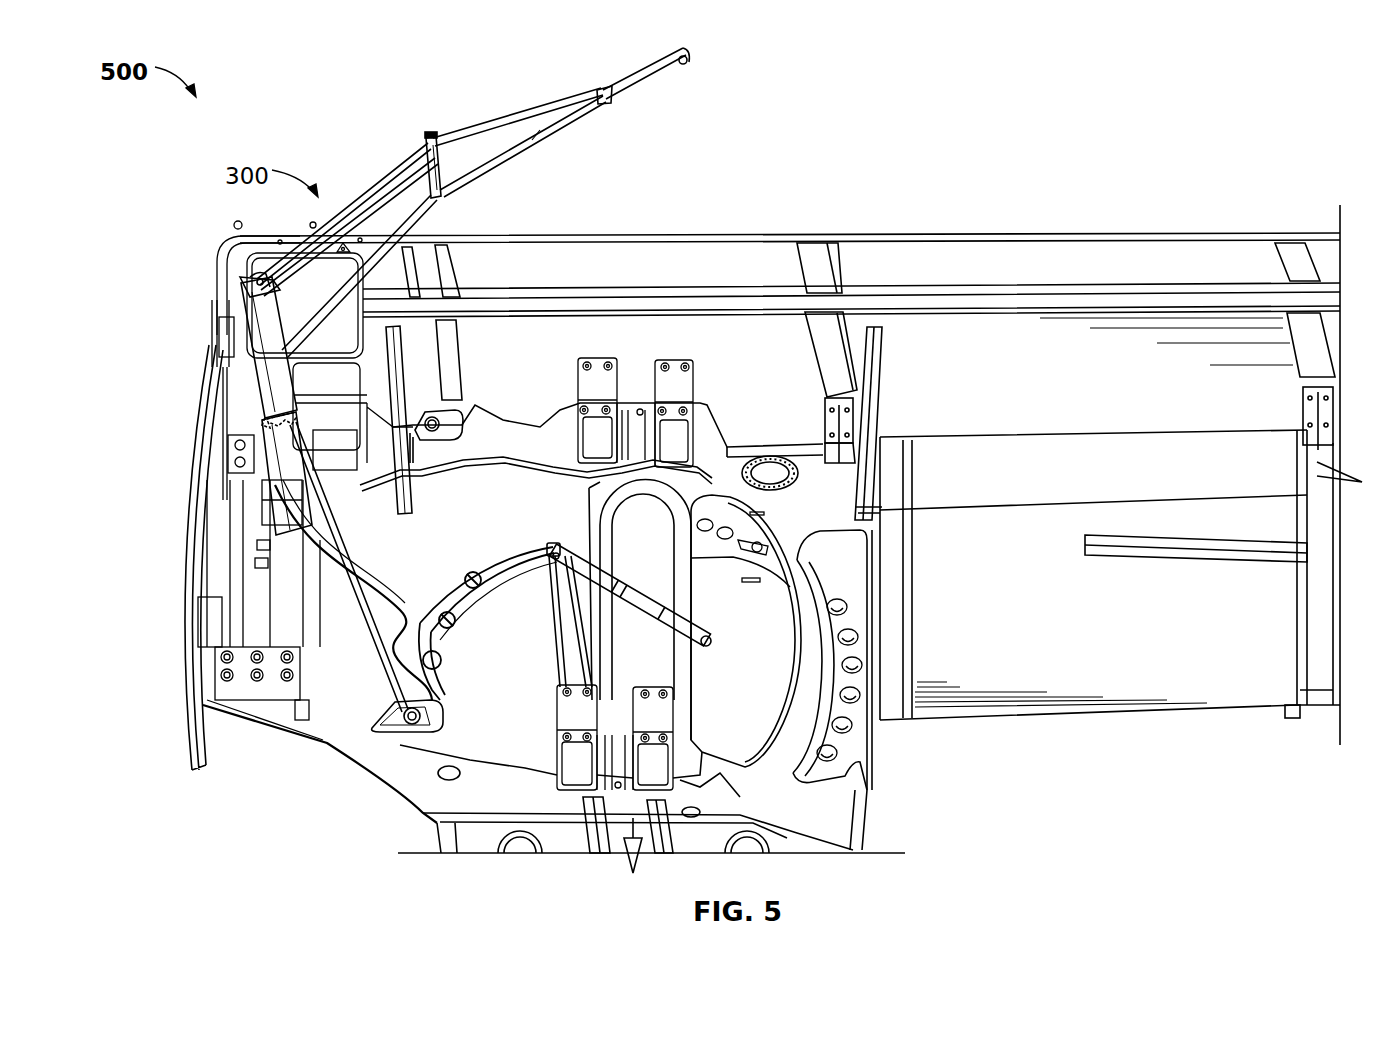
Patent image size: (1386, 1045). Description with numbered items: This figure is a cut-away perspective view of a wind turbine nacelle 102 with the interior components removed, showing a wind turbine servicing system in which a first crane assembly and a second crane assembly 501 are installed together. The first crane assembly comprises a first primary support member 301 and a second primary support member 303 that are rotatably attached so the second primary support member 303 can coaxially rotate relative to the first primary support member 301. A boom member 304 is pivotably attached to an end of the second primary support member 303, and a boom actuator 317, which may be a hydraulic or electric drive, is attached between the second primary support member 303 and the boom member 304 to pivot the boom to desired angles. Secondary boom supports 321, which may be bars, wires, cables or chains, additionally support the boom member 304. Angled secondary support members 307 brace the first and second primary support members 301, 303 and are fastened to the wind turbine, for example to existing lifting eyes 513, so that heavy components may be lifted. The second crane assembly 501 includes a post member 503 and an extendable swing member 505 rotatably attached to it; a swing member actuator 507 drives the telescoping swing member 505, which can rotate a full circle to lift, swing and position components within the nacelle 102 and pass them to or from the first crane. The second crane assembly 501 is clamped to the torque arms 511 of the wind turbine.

The nacelle 102 is at (978, 330).
The first primary support member 301 is at (287, 500).
The second primary support member 303 is at (262, 313).
The boom member 304 is at (512, 148).
The secondary support members 307 is at (407, 403).
The boom actuator 317 is at (432, 200).
The secondary boom supports 321 is at (392, 168).
The second crane assembly 501 is at (552, 640).
The post member 503 is at (568, 670).
The extendable swing member 505 is at (612, 595).
The swing member actuator 507 is at (573, 555).
The torque arms 511 is at (597, 672).
The lifting eyes 513 is at (455, 420).